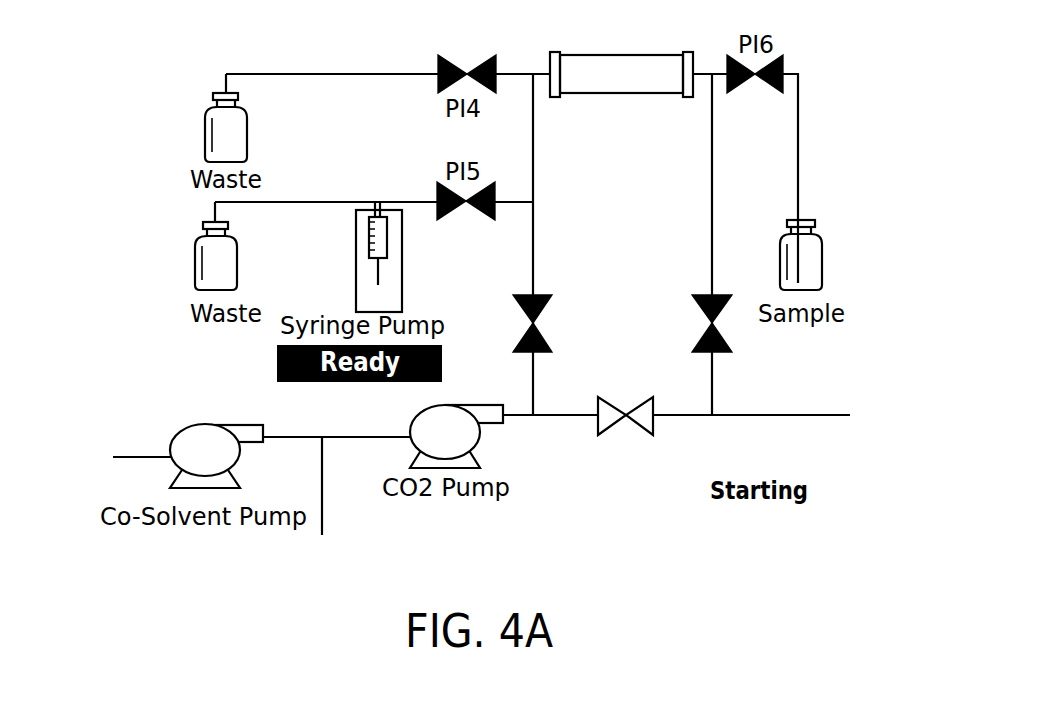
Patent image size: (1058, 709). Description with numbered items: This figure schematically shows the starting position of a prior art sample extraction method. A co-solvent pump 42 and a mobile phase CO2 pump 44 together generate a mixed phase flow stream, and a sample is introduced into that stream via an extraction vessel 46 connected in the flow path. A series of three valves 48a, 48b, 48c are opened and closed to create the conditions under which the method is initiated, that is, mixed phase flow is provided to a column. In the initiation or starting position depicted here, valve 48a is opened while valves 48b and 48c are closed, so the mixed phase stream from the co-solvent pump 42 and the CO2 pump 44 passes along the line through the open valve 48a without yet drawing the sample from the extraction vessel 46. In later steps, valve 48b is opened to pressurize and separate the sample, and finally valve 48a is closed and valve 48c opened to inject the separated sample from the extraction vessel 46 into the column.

The co-solvent pump 42 is at (240, 462).
The mobile phase (CO2) pump 44 is at (480, 443).
The extraction vessel 46 is at (619, 52).
The valve 48a is at (638, 430).
The valve 48b is at (546, 309).
The valve 48c is at (722, 350).